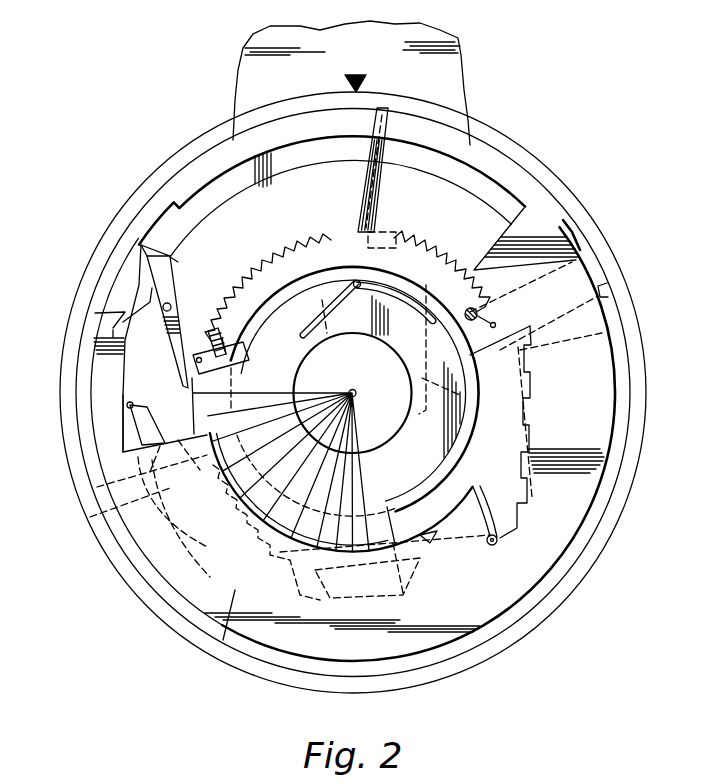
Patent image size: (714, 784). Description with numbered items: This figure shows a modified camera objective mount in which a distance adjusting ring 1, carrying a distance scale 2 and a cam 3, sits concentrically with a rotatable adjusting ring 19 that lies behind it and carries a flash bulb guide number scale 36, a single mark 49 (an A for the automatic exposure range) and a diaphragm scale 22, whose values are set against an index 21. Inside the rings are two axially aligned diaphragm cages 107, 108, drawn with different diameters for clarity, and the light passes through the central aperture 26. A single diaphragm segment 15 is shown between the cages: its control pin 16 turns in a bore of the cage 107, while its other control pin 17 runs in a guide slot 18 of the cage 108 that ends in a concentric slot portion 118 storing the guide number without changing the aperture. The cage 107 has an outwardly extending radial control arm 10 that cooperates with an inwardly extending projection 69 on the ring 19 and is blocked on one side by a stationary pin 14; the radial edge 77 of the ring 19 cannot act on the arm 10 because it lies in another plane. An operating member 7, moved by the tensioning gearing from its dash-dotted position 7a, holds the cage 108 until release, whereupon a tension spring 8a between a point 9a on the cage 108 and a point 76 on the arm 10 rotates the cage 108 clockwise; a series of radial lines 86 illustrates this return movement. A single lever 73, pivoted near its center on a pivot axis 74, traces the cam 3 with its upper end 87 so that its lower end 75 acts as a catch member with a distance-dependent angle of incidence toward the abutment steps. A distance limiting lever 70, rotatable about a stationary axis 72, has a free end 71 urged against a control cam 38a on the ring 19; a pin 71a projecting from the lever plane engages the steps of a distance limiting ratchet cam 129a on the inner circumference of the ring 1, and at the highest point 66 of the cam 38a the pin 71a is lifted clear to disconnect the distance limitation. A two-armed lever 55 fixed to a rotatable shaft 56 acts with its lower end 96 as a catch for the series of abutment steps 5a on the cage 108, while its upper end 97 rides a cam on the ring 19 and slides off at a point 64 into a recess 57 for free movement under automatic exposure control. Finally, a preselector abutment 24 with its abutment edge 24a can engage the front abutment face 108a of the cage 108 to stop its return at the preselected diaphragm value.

The distance adjusting ring 1 is at (458, 157).
The distance scale 2 is at (222, 165).
The cam 3 is at (130, 273).
The series of abutment steps 5a is at (300, 536).
The operating member 7 is at (222, 338).
The released position of operating member 7a is at (390, 232).
The tension spring 8a is at (262, 280).
The attachment point 9a is at (224, 379).
The radial control arm 10 is at (600, 298).
The stationary pin 14 is at (468, 307).
The diaphragm segment 15 is at (462, 396).
The control pin 16 is at (340, 330).
The control pin 17 is at (357, 280).
The guide slot 18 is at (322, 300).
The adjusting ring 19 is at (402, 103).
The index 21 is at (358, 73).
The diaphragm scale 22 is at (535, 165).
The preselector abutment 24 is at (365, 186).
The abutment edge 24a is at (365, 200).
The central aperture 26 is at (388, 403).
The flash bulb guide number scale 36 is at (240, 120).
The control cam 38a is at (532, 440).
The single mark A 49 is at (428, 112).
The two-armed lever 55 is at (97, 514).
The rotatable shaft 56 is at (165, 438).
The recess 57 is at (95, 313).
The cam slide-off point 64 is at (127, 405).
The highest point of cam 38a 66 is at (425, 540).
The inwardly extending projection 69 is at (575, 232).
The distance limiting lever 70 is at (420, 552).
The free end of lever 70 71 is at (498, 540).
The pin 71a is at (490, 508).
The stationary axis 72 is at (314, 560).
The lever 73 is at (176, 279).
The pivot axis 74 is at (172, 306).
The lower end of lever 73 75 is at (182, 384).
The attachment point 76 is at (493, 328).
The radial edge 77 is at (548, 340).
The series of radial lines 86 is at (328, 488).
The upper end of lever 73 87 is at (141, 244).
The lower end of lever 55 96 is at (200, 540).
The upper end of lever 55 97 is at (133, 404).
The second rotatable diaphragm cage 107 is at (270, 295).
The diaphragm cage 108 is at (291, 303).
The front abutment face 108a is at (210, 331).
The concentric slot portion 118 is at (400, 300).
The distance limiting ratchet cam 129a is at (530, 490).